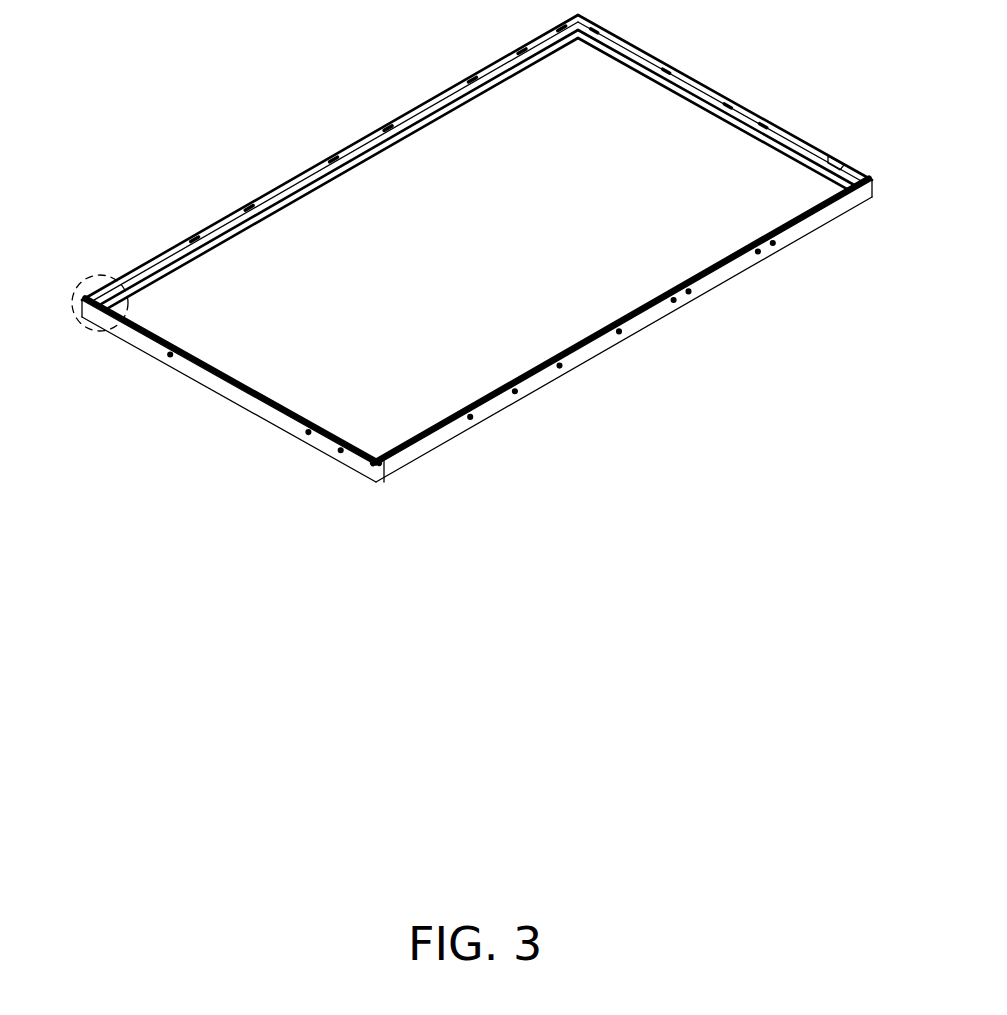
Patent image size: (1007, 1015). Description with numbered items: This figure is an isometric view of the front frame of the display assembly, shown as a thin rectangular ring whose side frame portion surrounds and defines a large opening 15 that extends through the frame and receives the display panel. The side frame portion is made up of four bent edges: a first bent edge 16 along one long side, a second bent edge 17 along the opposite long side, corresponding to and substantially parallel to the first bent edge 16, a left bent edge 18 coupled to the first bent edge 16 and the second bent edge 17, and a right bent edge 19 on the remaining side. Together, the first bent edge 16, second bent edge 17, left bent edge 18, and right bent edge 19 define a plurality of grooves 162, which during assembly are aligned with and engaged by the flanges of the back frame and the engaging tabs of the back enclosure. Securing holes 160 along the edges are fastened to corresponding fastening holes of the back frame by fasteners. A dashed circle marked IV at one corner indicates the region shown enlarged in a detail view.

The opening 15 is at (290, 232).
The first bent edge 16 is at (355, 148).
The second bent edge 17 is at (650, 315).
The left bent edge 18 is at (745, 120).
The right bent edge 19 is at (285, 420).
The securing holes 160 is at (165, 352).
The grooves 162 is at (190, 243).
The detail view circle IV is at (105, 282).